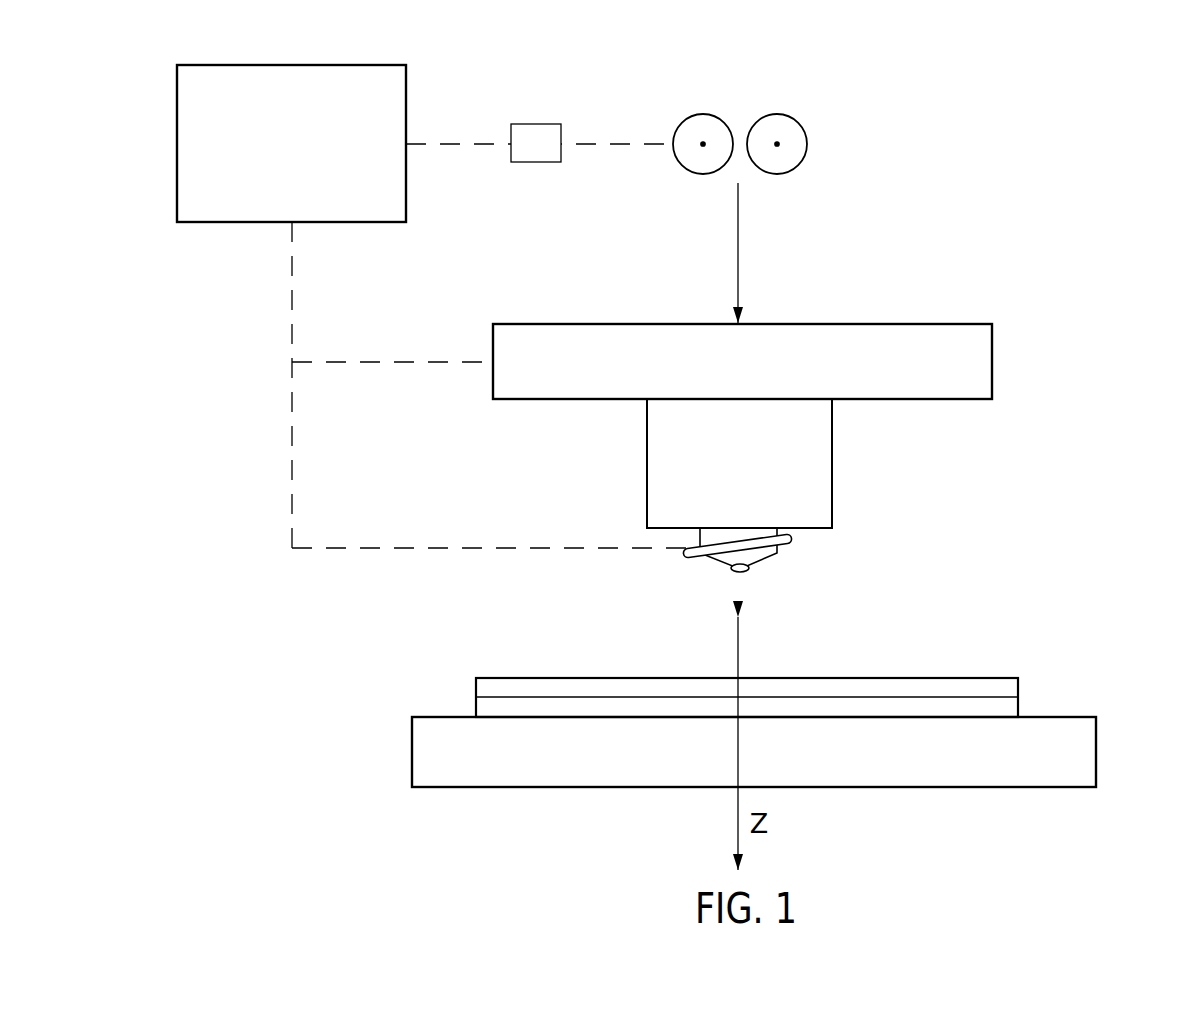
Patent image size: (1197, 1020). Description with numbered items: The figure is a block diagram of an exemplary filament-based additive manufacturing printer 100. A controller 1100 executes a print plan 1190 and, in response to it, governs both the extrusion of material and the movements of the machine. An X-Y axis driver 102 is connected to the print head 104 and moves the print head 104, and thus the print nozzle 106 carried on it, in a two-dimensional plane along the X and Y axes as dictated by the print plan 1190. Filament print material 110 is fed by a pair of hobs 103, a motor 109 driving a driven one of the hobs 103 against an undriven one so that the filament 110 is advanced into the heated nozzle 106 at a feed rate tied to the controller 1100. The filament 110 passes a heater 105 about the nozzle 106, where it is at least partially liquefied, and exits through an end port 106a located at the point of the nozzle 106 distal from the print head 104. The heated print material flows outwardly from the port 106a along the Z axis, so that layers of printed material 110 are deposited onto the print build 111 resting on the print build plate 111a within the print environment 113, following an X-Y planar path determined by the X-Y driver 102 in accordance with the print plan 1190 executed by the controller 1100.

The filament-based printer 100 is at (1077, 182).
The controller 1100 is at (300, 112).
The print plan 1190 is at (318, 161).
The motor 109 is at (518, 158).
The hobs 103 is at (690, 116).
The filament / print material 110 is at (738, 268).
The X-Y axis driver 102 is at (992, 357).
The print head 104 is at (643, 405).
The heater 105 is at (697, 556).
The print nozzle 106 is at (773, 556).
The end port 106a is at (748, 571).
The print build 111 is at (476, 698).
The print build plate 111a is at (1096, 756).
The print environment 113 is at (1103, 508).